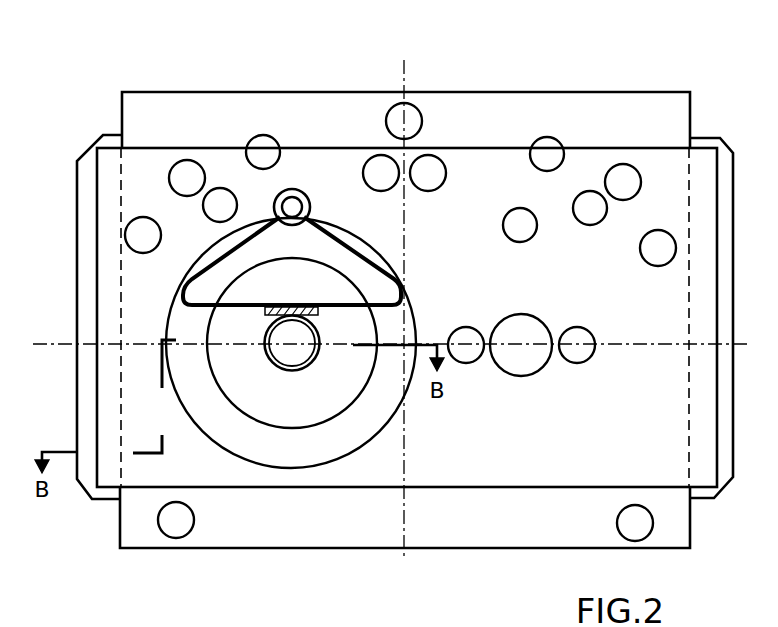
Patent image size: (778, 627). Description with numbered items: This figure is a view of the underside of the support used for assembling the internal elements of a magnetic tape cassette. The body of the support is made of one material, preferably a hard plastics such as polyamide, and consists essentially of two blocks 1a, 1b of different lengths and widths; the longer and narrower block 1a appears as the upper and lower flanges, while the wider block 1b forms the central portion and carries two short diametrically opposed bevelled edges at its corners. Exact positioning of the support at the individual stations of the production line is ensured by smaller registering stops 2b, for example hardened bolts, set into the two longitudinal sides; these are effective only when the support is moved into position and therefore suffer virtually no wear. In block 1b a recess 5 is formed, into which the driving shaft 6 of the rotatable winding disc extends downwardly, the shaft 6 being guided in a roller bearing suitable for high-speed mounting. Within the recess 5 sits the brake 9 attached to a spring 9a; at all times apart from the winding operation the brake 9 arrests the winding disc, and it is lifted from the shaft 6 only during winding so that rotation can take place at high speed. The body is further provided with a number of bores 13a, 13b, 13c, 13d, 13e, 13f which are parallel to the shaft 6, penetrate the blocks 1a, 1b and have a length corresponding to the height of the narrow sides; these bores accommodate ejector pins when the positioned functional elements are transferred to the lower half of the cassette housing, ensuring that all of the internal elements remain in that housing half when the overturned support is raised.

The block 1a is at (222, 105).
The block 1b is at (97, 300).
The registering stops 2b is at (398, 117).
The recess 5 is at (300, 458).
The driving shaft 6 is at (302, 360).
The brake 9 is at (244, 310).
The spring 9a is at (235, 310).
The bore 13a is at (185, 172).
The bore 13b is at (262, 148).
The bore 13c is at (132, 245).
The bore 13d is at (570, 356).
The bore 13e is at (206, 205).
The bore 13f is at (386, 183).